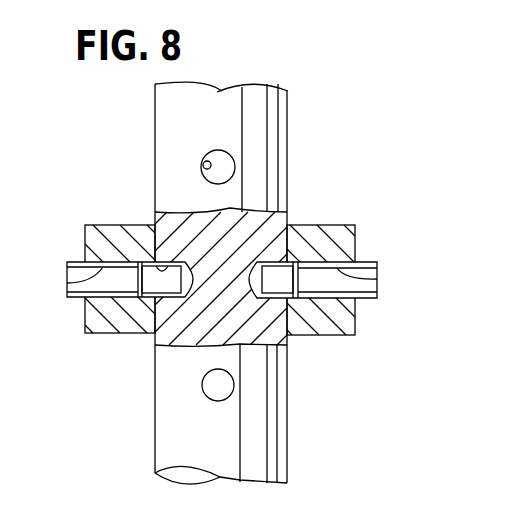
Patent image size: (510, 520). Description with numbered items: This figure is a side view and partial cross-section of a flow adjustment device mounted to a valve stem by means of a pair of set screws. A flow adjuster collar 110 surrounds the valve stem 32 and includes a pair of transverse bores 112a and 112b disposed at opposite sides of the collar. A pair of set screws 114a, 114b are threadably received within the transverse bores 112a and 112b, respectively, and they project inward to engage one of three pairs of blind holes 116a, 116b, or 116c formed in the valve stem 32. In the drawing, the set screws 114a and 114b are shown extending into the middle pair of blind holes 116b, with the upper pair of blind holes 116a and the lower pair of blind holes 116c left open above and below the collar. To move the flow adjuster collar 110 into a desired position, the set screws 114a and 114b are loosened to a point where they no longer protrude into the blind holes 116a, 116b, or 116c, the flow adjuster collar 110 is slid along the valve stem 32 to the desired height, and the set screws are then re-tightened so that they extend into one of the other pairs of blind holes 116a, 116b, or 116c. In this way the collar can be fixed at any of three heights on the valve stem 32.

The valve stem 32 is at (289, 136).
The flow adjuster collar 110 is at (355, 225).
The transverse bore 112a is at (67, 272).
The transverse bore 112b is at (377, 270).
The set screw 114a is at (67, 285).
The set screw 114b is at (378, 288).
The blind holes 116a is at (204, 165).
The blind holes 116b is at (148, 258).
The blind holes 116c is at (234, 387).